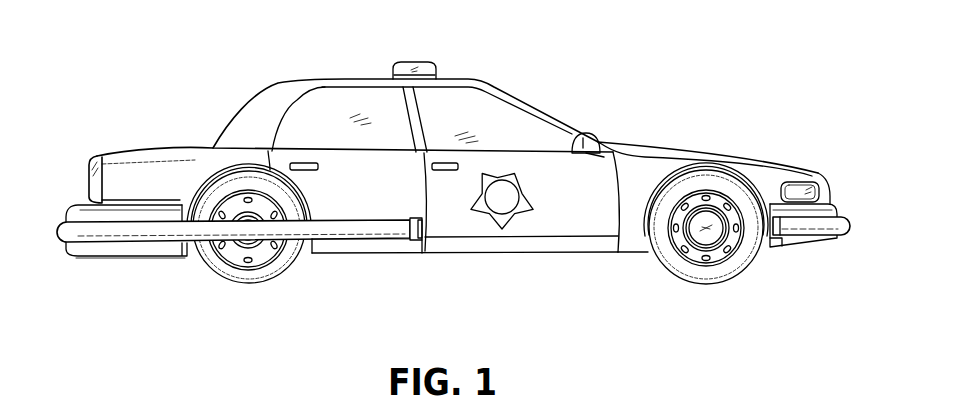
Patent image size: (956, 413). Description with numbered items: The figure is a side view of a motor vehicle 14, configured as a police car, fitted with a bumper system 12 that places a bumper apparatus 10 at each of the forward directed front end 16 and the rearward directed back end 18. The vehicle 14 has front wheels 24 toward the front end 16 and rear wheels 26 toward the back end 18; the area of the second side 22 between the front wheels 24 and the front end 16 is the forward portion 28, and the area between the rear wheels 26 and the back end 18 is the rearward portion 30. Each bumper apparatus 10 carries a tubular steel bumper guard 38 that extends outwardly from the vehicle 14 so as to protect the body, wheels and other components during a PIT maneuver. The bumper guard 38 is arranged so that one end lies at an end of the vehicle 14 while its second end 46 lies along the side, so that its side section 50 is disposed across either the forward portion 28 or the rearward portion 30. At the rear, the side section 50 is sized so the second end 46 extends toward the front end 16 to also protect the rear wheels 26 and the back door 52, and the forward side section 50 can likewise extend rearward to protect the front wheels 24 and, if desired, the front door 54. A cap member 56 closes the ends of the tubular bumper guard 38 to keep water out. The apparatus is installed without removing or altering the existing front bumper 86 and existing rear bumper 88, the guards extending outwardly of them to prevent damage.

The bumper apparatus 10 is at (333, 245).
The bumper system 12 is at (103, 260).
The motor vehicle 14 is at (488, 67).
The front end 16 is at (798, 154).
The back end 18 is at (66, 180).
The second side 22 is at (566, 264).
The front wheels 24 is at (704, 279).
The rear wheels 26 is at (235, 279).
The forward portion 28 is at (760, 173).
The rearward portion 30 is at (192, 168).
The bumper guard 38 is at (175, 233).
The second end 46 is at (410, 241).
The side section 50 is at (265, 228).
The back door 52 is at (347, 163).
The front door 54 is at (543, 210).
The cap member 56 is at (423, 235).
The existing front bumper 86 is at (817, 186).
The existing rear bumper 88 is at (86, 251).